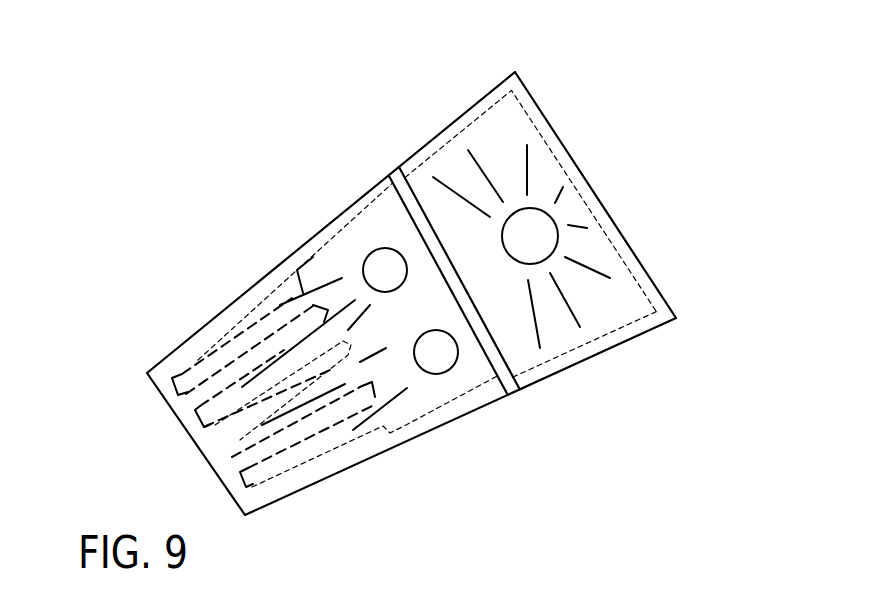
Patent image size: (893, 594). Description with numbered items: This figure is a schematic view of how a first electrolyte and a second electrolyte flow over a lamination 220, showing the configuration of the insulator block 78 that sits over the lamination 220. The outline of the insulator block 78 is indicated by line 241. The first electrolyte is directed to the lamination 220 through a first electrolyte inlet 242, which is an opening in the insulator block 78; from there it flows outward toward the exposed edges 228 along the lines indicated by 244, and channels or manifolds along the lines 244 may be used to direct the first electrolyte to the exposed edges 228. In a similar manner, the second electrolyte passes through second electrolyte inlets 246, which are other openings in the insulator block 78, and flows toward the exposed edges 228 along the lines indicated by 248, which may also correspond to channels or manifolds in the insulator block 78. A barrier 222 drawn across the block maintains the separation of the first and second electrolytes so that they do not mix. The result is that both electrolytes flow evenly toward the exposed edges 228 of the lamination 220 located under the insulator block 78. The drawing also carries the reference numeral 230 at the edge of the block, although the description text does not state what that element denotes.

The insulator block 78 is at (638, 49).
The lamination 220 is at (620, 326).
The barrier 222 is at (393, 171).
The exposed edges 228 is at (387, 311).
The notch 230 is at (358, 219).
The line 241 is at (668, 306).
The first electrolyte inlet 242 is at (558, 218).
The lines 244 is at (477, 163).
The second electrolyte inlets 246 is at (362, 260).
The lines 248 is at (303, 294).